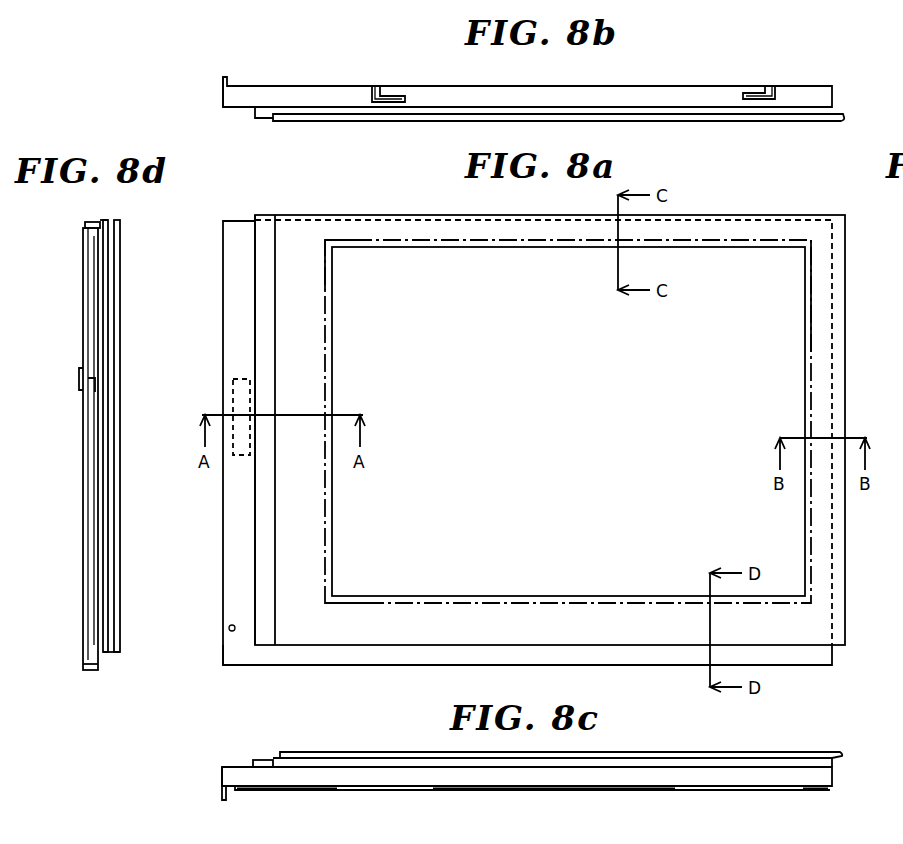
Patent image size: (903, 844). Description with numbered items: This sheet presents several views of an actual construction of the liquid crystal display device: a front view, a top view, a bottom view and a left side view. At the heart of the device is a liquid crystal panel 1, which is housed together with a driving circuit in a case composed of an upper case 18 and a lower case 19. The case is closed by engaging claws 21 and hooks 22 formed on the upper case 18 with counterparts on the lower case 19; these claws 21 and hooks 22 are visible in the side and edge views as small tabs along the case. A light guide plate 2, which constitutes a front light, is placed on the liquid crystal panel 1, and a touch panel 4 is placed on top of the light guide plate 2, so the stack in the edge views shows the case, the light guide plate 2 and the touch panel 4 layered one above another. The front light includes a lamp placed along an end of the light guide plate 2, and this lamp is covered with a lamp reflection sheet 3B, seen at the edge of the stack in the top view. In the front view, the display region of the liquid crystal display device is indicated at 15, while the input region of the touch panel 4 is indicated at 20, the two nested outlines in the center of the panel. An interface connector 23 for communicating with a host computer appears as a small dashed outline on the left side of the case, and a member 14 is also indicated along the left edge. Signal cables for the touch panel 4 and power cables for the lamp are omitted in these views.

In FIG. 8b, the liquid crystal panel 1 is at (549, 105).
In FIG. 8a, the liquid crystal panel 1 is at (497, 421).
In FIG. 8d, the liquid crystal panel 1 is at (92, 433).
In FIG. 8c, the liquid crystal panel 1 is at (531, 772).
In FIG. 8b, the light guide plate 2 is at (833, 100).
In FIG. 8a, the light guide plate 2 is at (342, 665).
In FIG. 8d, the light guide plate 2 is at (91, 446).
In FIG. 8c, the light guide plate 2 is at (832, 775).
In FIG. 8b, the lamp reflection sheet 3B is at (266, 120).
In FIG. 8b, the touch panel 4 is at (845, 117).
In FIG. 8a, the touch panel 4 is at (840, 622).
In FIG. 8d, the touch panel 4 is at (118, 220).
In FIG. 8c, the touch panel 4 is at (843, 752).
In FIG. 8a, the holding member 14 is at (255, 547).
In FIG. 8d, the holding member 14 is at (103, 220).
In FIG. 8c, the holding member 14 is at (262, 760).
In FIG. 8a, the display region 15 is at (811, 308).
In FIG. 8b, the upper case 18 is at (237, 110).
In FIG. 8a, the upper case 18 is at (226, 667).
In FIG. 8d, the upper case 18 is at (108, 654).
In FIG. 8c, the upper case 18 is at (225, 767).
In FIG. 8d, the lower case 19 is at (84, 470).
In FIG. 8c, the lower case 19 is at (520, 790).
In FIG. 8a, the input region 20 is at (811, 352).
In FIG. 8b, the claw 21 is at (392, 85).
In FIG. 8d, the claw 21 is at (79, 379).
In FIG. 8c, the hook 22 is at (375, 791).
In FIG. 8a, the interface connector 23 is at (233, 396).